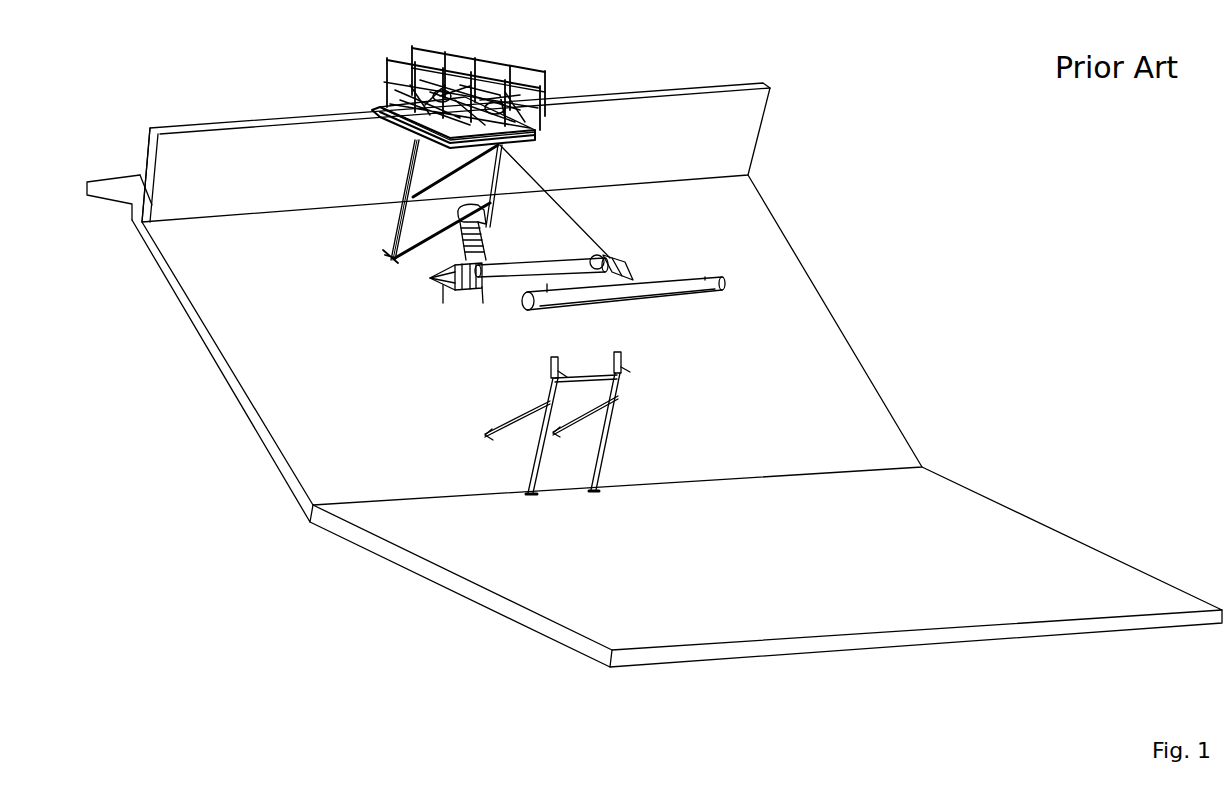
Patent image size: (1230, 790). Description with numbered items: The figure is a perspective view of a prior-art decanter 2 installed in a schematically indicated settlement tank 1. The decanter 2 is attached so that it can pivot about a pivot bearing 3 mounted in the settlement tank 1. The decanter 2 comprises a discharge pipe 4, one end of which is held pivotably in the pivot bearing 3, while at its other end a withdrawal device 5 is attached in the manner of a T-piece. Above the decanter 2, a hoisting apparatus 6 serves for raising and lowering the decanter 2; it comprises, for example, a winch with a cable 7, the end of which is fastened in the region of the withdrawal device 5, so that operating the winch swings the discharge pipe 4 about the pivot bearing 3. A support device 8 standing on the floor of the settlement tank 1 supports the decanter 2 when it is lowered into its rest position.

The settlement tank 1 is at (970, 517).
The decanter 2 is at (672, 268).
The pivot bearing 3 is at (445, 285).
The discharge pipe 4 is at (537, 268).
The withdrawal device 5 is at (697, 286).
The hoisting apparatus 6 is at (400, 122).
The cable 7 is at (553, 205).
The support device 8 is at (615, 418).